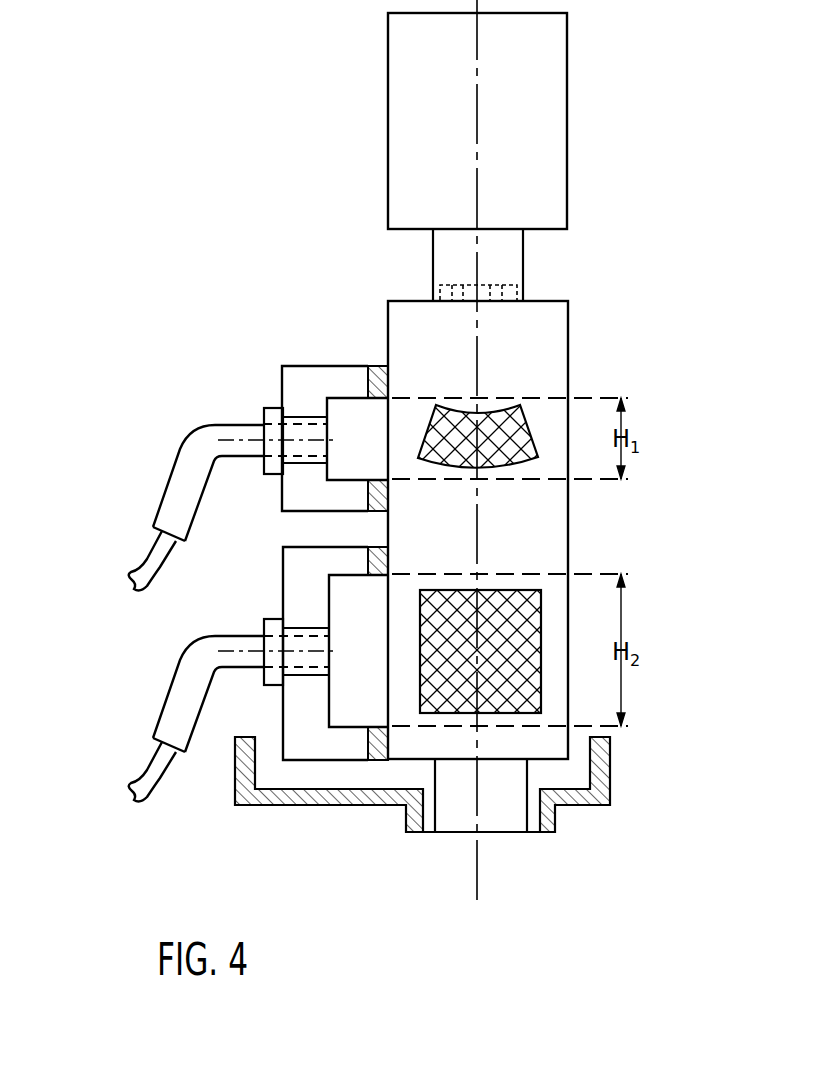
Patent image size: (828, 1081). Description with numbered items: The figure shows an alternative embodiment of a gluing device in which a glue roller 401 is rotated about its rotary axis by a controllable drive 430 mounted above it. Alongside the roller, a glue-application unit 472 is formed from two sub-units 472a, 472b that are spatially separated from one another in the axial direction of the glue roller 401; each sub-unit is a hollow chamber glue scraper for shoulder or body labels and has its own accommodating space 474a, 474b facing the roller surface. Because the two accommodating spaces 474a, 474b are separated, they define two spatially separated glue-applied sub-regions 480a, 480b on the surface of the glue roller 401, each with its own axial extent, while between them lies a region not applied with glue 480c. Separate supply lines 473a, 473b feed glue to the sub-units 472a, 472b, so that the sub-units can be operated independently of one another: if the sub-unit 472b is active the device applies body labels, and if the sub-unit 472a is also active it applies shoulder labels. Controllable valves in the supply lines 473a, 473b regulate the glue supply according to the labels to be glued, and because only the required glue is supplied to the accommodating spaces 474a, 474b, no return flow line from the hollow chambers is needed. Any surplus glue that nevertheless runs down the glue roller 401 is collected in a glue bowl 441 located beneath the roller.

The controllable drive 430 is at (548, 51).
The glue roller 401 is at (578, 323).
The glue-application unit 472 is at (262, 380).
The sub-unit 472a is at (303, 365).
The sub-unit 472b is at (313, 750).
The supply line 473a is at (172, 474).
The supply line 473b is at (172, 686).
The accommodating space 474a is at (325, 439).
The accommodating space 474b is at (326, 651).
The sub-region 480a is at (516, 413).
The sub-region 480b is at (530, 590).
The region not applied with glue 480c is at (557, 513).
The glue bowl 441 is at (608, 806).